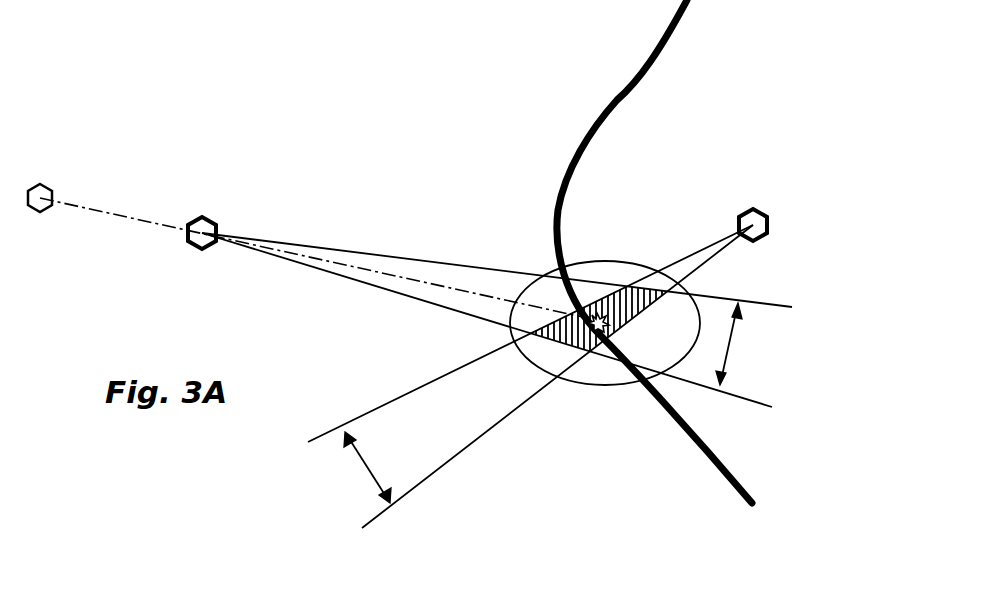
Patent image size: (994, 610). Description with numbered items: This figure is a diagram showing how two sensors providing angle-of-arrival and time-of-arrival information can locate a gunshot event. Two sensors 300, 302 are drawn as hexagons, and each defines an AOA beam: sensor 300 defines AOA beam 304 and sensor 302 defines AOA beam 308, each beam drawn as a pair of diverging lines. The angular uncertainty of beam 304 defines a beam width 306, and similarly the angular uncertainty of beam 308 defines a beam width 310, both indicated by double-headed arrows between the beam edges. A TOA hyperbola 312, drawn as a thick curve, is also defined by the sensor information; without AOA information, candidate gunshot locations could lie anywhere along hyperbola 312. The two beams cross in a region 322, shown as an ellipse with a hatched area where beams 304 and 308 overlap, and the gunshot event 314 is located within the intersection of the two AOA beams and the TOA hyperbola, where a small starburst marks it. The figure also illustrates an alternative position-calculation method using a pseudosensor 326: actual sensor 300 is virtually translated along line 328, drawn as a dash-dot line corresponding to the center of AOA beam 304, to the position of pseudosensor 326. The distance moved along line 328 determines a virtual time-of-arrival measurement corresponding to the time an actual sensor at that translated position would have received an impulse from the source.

The sensor 300 is at (190, 250).
The sensor 302 is at (767, 212).
The AOA beam 304 is at (440, 262).
The beam width 306 is at (730, 345).
The AOA beam 308 is at (668, 264).
The beam width 310 is at (368, 470).
The TOA hyperbola 312 is at (598, 125).
The gunshot event 314 is at (610, 322).
The region 322 is at (590, 362).
The pseudosensor 326 is at (52, 186).
The line 328 is at (140, 216).